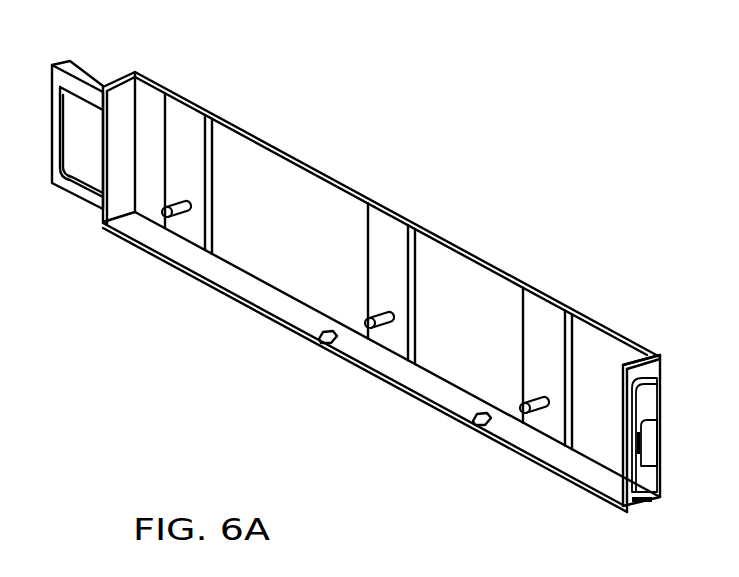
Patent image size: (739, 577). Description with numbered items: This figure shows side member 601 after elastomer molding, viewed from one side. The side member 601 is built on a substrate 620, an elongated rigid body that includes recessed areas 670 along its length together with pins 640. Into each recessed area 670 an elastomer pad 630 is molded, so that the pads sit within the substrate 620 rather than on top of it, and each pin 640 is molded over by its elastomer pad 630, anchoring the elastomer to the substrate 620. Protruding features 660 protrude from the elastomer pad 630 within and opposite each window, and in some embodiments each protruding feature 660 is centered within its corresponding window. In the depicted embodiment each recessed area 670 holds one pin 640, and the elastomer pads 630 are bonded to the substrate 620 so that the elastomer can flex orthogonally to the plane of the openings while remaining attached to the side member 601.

The side member 601 is at (540, 202).
The substrate 620 is at (356, 286).
The elastomer pad 630 is at (413, 258).
The pin 640 is at (173, 230).
The protruding feature 660 is at (521, 428).
The recessed area 670 is at (177, 142).